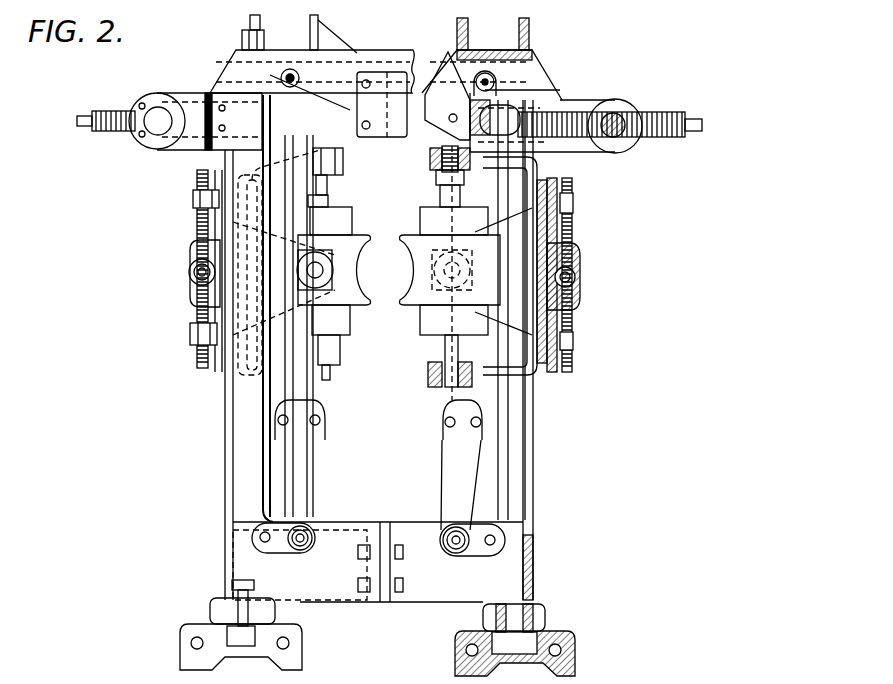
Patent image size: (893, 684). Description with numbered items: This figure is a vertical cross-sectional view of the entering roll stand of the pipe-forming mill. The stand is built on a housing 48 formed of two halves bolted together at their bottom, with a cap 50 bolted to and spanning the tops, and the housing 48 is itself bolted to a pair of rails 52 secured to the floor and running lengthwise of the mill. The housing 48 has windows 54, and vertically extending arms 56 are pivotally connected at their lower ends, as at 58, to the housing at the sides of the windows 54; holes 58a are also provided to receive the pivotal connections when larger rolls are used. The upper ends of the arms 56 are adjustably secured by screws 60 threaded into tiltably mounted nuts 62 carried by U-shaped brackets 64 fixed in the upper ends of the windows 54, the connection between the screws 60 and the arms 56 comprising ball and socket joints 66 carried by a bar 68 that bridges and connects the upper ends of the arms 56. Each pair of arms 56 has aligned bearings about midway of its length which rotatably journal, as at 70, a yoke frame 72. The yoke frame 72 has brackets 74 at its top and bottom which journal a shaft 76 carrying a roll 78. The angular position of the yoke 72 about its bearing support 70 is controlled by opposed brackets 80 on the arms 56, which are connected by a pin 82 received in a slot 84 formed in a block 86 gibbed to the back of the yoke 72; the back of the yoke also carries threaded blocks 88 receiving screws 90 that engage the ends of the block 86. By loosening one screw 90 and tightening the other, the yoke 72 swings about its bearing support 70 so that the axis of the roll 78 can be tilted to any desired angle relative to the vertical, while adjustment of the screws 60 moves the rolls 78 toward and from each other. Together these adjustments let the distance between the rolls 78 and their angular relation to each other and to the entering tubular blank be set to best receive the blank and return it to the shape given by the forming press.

The housing 48 is at (225, 487).
The cap 50 is at (355, 52).
The rails 52 is at (455, 664).
The windows 54 is at (518, 447).
The arms 56 is at (450, 457).
The pivotal connection 58 is at (308, 546).
The holes 58a is at (268, 544).
The screws 60 is at (90, 130).
The nuts 62 is at (178, 142).
The U-shaped brackets 64 is at (156, 134).
The ball and socket joints 66 is at (298, 68).
The bar 68 is at (470, 104).
The bearing support 70 is at (420, 285).
The yoke frame 72 is at (238, 372).
The brackets 74 is at (320, 148).
The shaft 76 is at (442, 190).
The roll 78 is at (405, 237).
The opposed brackets 80 is at (200, 246).
The pin 82 is at (200, 283).
The slot 84 is at (190, 275).
The block 86 is at (205, 262).
The blocks 88 is at (192, 205).
The screws 90 is at (197, 183).